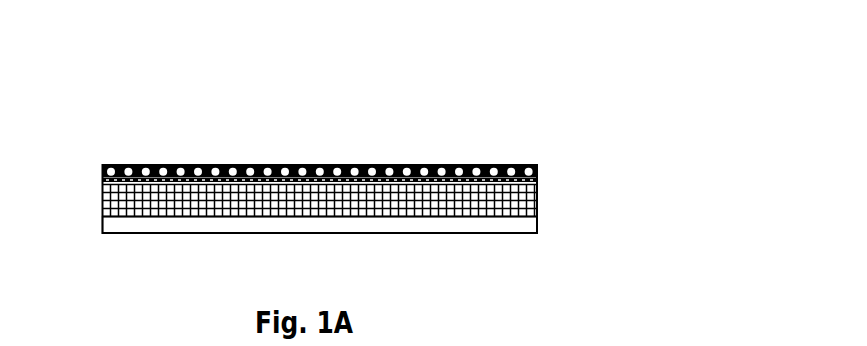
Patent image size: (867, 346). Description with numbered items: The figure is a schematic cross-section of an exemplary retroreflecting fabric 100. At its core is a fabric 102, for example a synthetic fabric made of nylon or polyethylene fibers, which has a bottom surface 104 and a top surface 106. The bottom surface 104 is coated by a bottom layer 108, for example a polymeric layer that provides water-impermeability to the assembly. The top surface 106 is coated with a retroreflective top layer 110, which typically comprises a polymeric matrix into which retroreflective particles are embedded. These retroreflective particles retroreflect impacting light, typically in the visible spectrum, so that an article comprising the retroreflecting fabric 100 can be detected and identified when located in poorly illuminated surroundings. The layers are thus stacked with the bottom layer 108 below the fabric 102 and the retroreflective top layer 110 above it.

The retroreflecting fabric 100 is at (158, 73).
The fabric 102 is at (523, 203).
The bottom surface 104 is at (152, 222).
The top surface 106 is at (433, 172).
The bottom layer 108 is at (498, 223).
The retroreflective top layer 110 is at (148, 167).